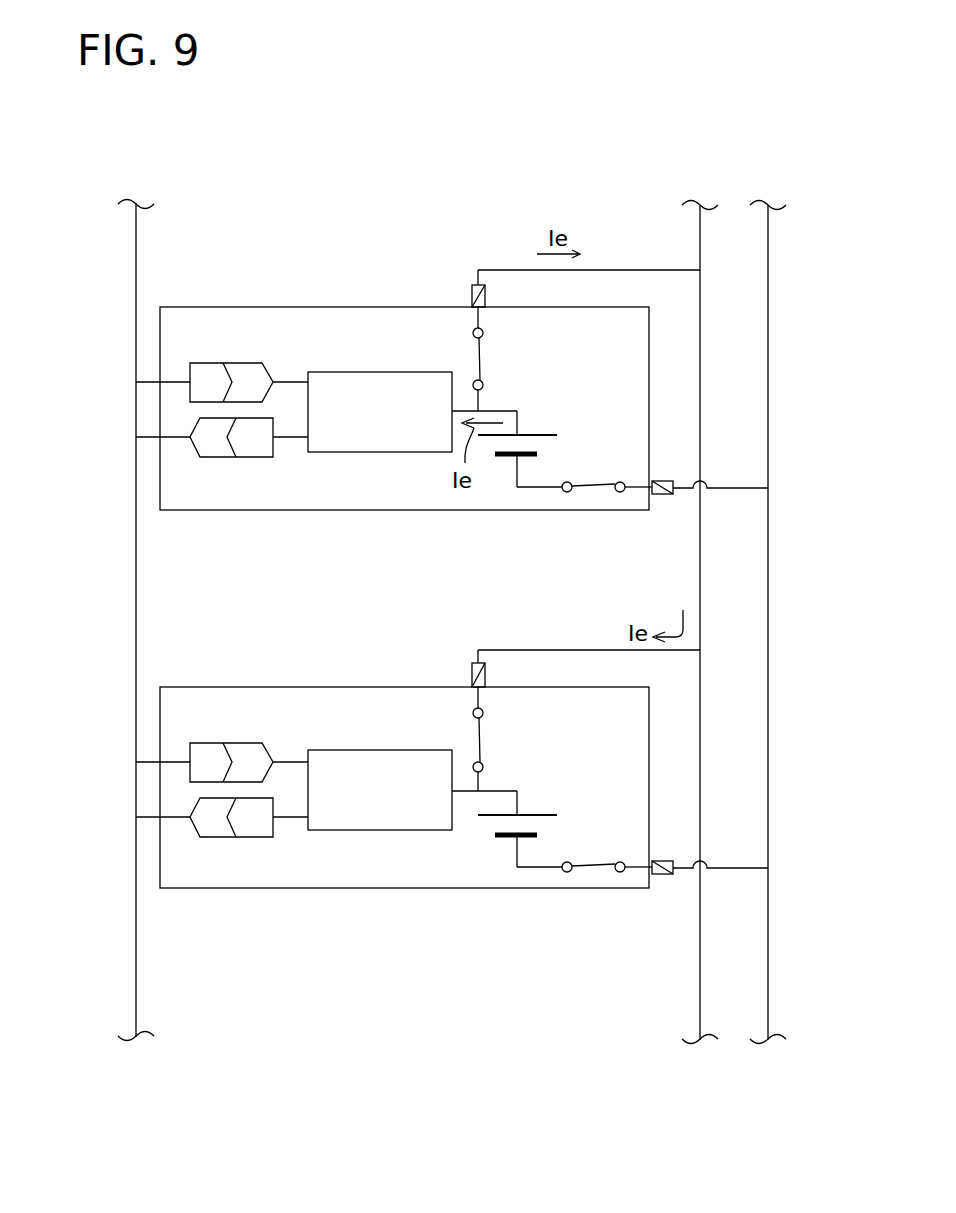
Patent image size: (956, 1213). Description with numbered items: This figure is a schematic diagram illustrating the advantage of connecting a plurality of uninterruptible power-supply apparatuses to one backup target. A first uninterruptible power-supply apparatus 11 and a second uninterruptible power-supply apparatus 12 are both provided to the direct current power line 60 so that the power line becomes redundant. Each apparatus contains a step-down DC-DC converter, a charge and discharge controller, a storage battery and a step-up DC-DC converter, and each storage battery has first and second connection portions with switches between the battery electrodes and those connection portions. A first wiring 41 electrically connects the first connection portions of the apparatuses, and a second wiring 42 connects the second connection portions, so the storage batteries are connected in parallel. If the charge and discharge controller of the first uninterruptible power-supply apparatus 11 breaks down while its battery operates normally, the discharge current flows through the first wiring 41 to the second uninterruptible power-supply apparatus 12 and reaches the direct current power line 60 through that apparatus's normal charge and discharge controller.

The first uninterruptible power-supply apparatus 11 is at (302, 305).
The second uninterruptible power-supply apparatus 12 is at (302, 685).
The first wiring 41 is at (702, 312).
The second wiring 42 is at (768, 348).
The direct current power line 60 is at (136, 590).